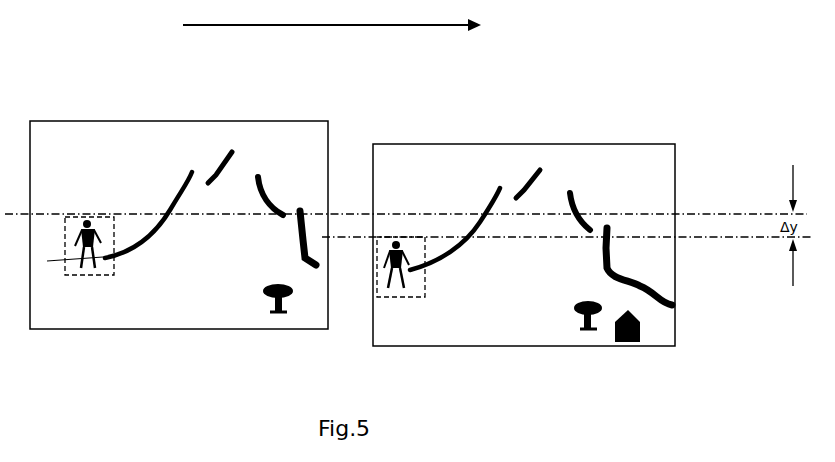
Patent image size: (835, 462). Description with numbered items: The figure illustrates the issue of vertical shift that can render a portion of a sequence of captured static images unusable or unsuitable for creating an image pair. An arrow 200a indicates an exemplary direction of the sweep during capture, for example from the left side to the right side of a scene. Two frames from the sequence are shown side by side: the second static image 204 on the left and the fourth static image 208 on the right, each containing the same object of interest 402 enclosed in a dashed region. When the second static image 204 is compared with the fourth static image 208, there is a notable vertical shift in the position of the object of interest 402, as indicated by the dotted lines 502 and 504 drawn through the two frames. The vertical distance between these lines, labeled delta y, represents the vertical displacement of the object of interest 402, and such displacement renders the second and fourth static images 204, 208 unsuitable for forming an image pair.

The arrow 200a is at (226, 37).
The second static image 204 is at (205, 330).
The fourth static image 208 is at (524, 351).
The object of interest 402 is at (120, 265).
The dotted line 502 is at (704, 212).
The dotted line 504 is at (751, 238).